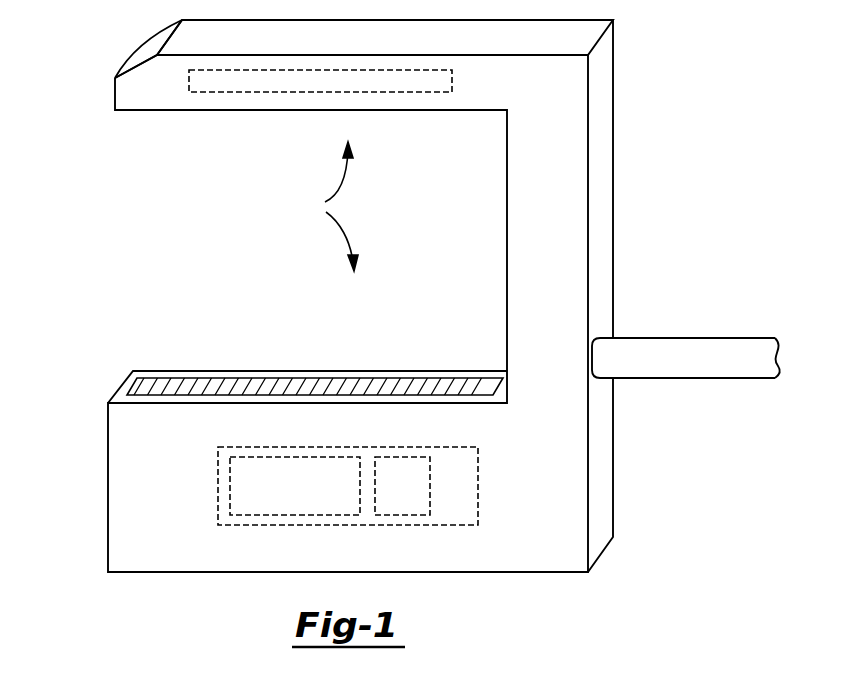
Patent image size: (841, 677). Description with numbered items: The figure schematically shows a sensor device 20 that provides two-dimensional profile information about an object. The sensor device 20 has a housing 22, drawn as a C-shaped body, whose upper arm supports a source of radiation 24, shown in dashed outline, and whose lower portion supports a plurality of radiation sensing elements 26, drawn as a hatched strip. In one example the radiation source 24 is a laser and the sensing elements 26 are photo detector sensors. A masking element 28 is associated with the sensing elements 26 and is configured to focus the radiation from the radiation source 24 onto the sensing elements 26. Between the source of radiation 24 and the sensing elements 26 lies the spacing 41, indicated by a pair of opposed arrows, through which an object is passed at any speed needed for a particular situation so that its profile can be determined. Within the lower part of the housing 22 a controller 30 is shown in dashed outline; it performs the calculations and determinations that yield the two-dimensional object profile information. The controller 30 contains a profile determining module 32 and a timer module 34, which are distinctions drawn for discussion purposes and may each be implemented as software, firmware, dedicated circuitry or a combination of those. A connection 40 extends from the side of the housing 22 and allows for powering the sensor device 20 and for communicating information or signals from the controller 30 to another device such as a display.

The sensor device 20 is at (361, 296).
The housing 22 is at (602, 161).
The source of radiation 24 is at (238, 83).
The radiation sensing elements 26 is at (230, 385).
The masking element 28 is at (330, 375).
The controller 30 is at (305, 474).
The profile determining module 32 is at (308, 499).
The timer module 34 is at (415, 498).
The connection 40 is at (700, 362).
The spacing 41 is at (329, 206).